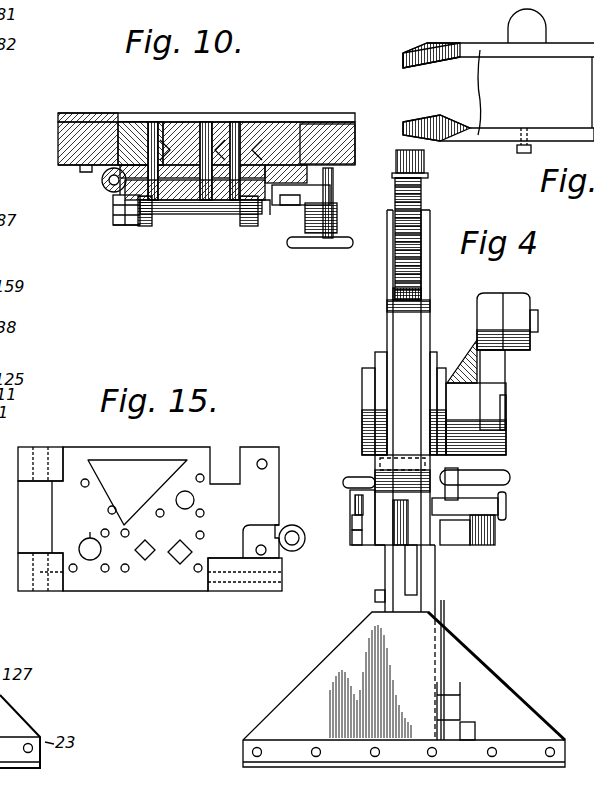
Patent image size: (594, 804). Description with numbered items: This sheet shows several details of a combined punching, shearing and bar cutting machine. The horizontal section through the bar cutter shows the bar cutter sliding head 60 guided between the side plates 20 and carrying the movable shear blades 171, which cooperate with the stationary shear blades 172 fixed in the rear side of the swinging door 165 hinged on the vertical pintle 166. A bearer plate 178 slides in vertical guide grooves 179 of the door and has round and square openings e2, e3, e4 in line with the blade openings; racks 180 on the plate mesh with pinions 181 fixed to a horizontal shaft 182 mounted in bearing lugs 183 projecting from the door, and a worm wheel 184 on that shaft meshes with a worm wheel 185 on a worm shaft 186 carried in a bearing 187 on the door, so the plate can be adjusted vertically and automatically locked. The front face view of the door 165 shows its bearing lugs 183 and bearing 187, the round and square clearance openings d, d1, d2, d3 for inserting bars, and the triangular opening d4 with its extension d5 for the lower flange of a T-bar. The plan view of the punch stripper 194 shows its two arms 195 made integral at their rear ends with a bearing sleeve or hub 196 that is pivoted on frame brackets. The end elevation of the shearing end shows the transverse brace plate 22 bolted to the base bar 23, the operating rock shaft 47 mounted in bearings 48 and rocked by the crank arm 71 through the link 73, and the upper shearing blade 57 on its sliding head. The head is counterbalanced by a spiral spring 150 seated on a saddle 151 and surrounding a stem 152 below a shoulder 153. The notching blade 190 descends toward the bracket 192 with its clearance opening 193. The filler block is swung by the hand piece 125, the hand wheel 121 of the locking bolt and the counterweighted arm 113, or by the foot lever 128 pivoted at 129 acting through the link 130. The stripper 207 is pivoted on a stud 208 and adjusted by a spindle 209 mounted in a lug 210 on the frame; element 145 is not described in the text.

In FIG. 10, the side plates 20 is at (74, 113).
In FIG. 4, the side plates 20 is at (428, 278).
In FIG. 10, the bearing 187 is at (327, 144).
In FIG. 4, the bearing 187 is at (345, 485).
In FIG. 15, the bearing 187 is at (292, 525).
In FIG. 10, the stationary shear blades 172 is at (160, 150).
In FIG. 10, the movable shear blades 171 is at (206, 150).
In FIG. 10, the bar cutter sliding head 60 is at (240, 140).
In FIG. 10, the swinging door 165 is at (268, 165).
In FIG. 15, the swinging door 165 is at (130, 591).
In FIG. 10, the vertical pintle 166 is at (104, 186).
In FIG. 10, the pinion shaft 182 is at (210, 215).
In FIG. 10, the pinions 181 is at (148, 226).
In FIG. 10, the vertical guide grooves 179 is at (115, 205).
In FIG. 10, the bearing lugs 183 is at (113, 215).
In FIG. 15, the bearing lugs 183 is at (45, 553).
In FIG. 10, the bearer plate 178 is at (128, 228).
In FIG. 10, the racks 180 is at (262, 228).
In FIG. 10, the worm wheel 184 is at (336, 176).
In FIG. 10, the worm wheel 185 is at (336, 210).
In FIG. 10, the worm shaft 186 is at (330, 250).
In FIG. 10, the bearer plate opening e4 is at (140, 225).
In FIG. 10, the bearer plate opening e3 is at (185, 208).
In FIG. 10, the bearer plate opening e2 is at (235, 210).
In FIG. 17, the stripper 194 is at (498, 75).
In FIG. 17, the stripper arms 195 is at (468, 92).
In FIG. 17, the bearing sleeve or hub 196 is at (547, 125).
In FIG. 4, the stem 152 is at (424, 158).
In FIG. 4, the shoulder 153 is at (428, 177).
In FIG. 4, the spiral expansively acting spring 150 is at (422, 225).
In FIG. 4, the saddle 151 is at (395, 294).
In FIG. 4, the bearings 48 is at (378, 352).
In FIG. 4, the link 73 is at (520, 293).
In FIG. 4, the crank arm 71 is at (500, 360).
In FIG. 4, the operating rock shaft 47 is at (506, 412).
In FIG. 4, the reciprocating notching blade 190 is at (398, 436).
In FIG. 4, the bracket 192 is at (385, 463).
In FIG. 4, the hand piece 125 is at (510, 477).
In FIG. 4, the hand wheel 121 is at (506, 512).
In FIG. 4, the counterweighted arm 113 is at (472, 535).
In FIG. 4, the clearance opening 193 is at (440, 535).
In FIG. 4, the lug 210 is at (355, 510).
In FIG. 4, the adjusting spindle 209 is at (352, 522).
In FIG. 4, the stud 208 is at (355, 540).
In FIG. 4, the stripper 207 is at (372, 570).
In FIG. 4, the lug 145 is at (392, 575).
In FIG. 4, the upper shearing blade 57 is at (418, 570).
In FIG. 4, the link 130 is at (446, 605).
In FIG. 4, the transverse brace plates 22 is at (472, 662).
In FIG. 4, the base bars 23 is at (243, 752).
In FIG. 4, the foot lever 128 is at (462, 698).
In FIG. 4, the pivot 129 is at (476, 736).
In FIG. 15, the triangular shaped opening d4 is at (131, 480).
In FIG. 15, the extension d5 is at (118, 509).
In FIG. 15, the clearance opening d is at (194, 500).
In FIG. 15, the clearance opening d3 is at (76, 522).
In FIG. 15, the clearance opening d2 is at (158, 534).
In FIG. 15, the clearance opening d1 is at (192, 552).